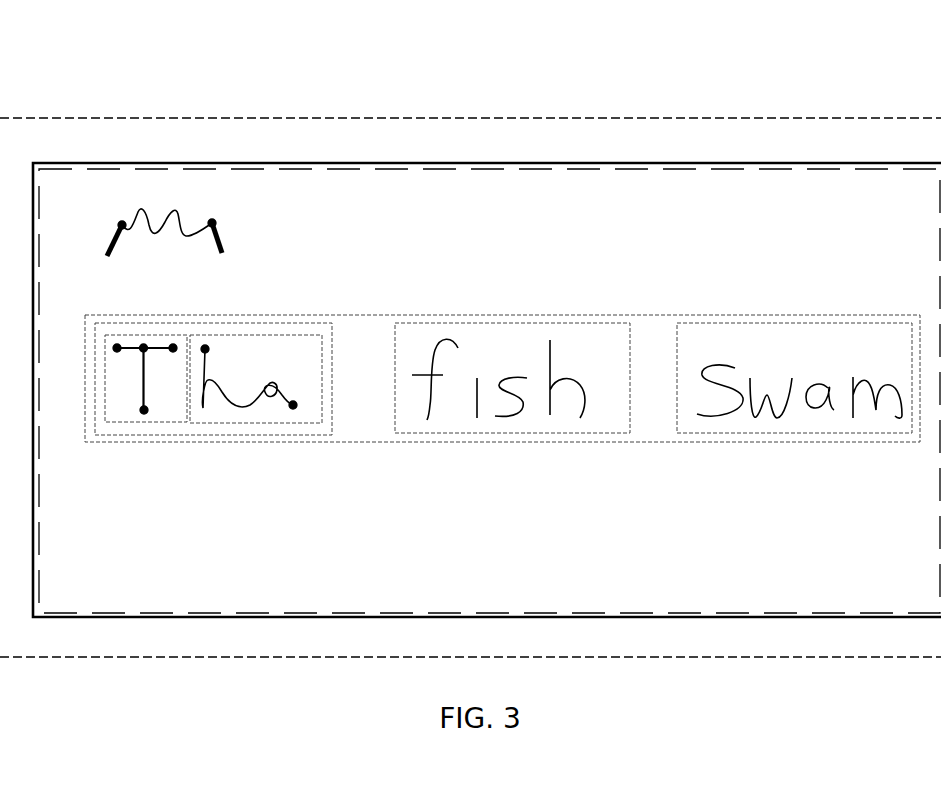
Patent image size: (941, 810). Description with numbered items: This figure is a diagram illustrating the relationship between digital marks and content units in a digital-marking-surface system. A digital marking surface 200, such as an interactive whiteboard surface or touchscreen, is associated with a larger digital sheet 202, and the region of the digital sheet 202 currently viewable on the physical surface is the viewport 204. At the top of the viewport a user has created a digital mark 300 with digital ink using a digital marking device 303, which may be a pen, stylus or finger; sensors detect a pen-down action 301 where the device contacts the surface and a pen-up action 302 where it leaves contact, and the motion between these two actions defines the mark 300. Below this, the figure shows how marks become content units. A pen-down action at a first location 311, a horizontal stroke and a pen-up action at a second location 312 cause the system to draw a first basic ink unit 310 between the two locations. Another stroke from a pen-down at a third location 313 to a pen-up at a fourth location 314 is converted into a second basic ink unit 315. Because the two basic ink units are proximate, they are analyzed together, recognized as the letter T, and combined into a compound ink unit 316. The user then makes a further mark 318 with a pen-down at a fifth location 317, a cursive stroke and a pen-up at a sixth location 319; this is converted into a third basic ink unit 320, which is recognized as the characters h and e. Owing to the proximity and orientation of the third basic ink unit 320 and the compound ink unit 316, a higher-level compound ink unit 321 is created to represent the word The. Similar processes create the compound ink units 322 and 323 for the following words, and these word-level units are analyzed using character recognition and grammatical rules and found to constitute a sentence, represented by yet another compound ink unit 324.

The digital marking surface 200 is at (358, 159).
The digital sheet 202 is at (523, 120).
The viewport 204 is at (205, 159).
The digital mark 300 is at (185, 208).
The pen-down action 301 is at (113, 218).
The pen-up action 302 is at (218, 217).
The digital marking device 303 is at (209, 258).
The first basic ink unit 310 is at (144, 341).
The first location 311 is at (118, 341).
The second location 312 is at (175, 341).
The third location 313 is at (138, 353).
The fourth location 314 is at (138, 413).
The second basic ink unit 315 is at (138, 378).
The compound ink unit 316 is at (140, 427).
The fifth location 317 is at (212, 341).
The mark 318 is at (231, 380).
The sixth location 319 is at (297, 395).
The third basic ink unit 320 is at (255, 425).
The compound ink unit 321 is at (303, 437).
The compound ink unit 322 is at (530, 438).
The compound ink unit 323 is at (750, 438).
The compound ink unit 324 is at (462, 444).